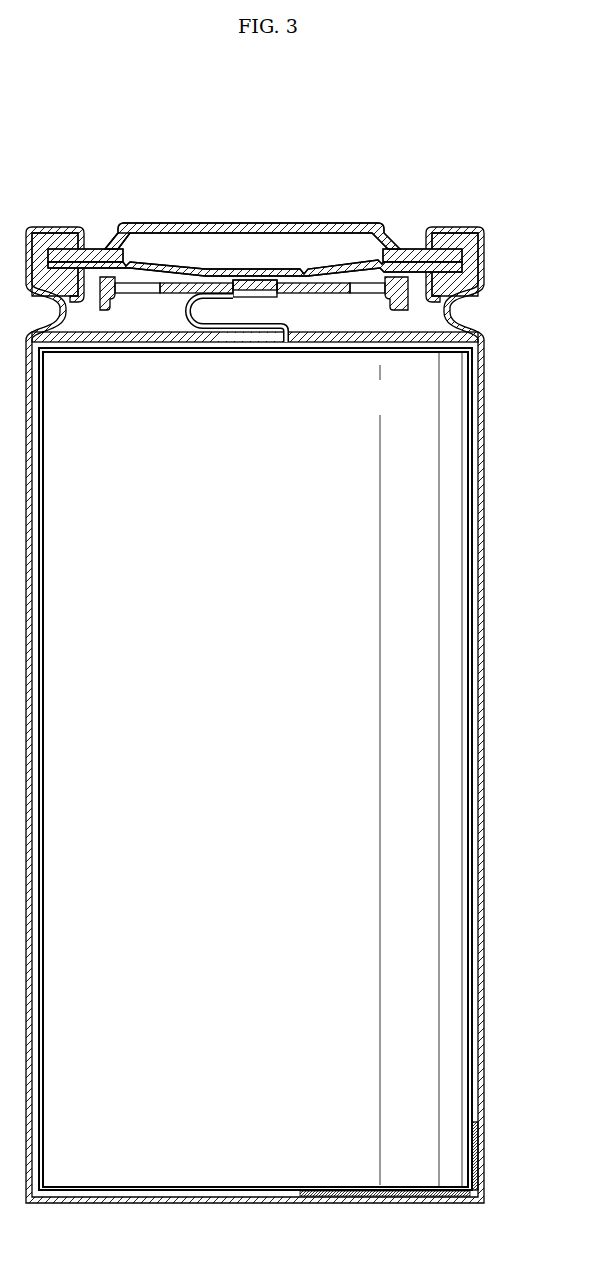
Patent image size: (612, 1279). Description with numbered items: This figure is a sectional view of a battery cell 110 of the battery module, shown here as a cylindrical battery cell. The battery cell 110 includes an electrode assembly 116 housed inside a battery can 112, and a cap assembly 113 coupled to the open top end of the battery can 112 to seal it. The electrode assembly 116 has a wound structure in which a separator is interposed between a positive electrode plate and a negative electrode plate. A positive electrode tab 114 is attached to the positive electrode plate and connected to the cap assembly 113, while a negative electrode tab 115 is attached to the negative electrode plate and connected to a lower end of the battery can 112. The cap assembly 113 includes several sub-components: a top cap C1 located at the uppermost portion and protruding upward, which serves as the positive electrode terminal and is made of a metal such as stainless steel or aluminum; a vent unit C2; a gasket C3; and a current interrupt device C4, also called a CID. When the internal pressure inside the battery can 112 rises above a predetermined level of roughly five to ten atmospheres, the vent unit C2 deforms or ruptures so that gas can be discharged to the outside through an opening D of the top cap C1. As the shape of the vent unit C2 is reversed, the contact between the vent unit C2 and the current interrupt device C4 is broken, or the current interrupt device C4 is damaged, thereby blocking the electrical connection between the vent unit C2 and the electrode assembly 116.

The battery cell 110 is at (176, 133).
The battery can 112 is at (479, 479).
The cap assembly 113 is at (451, 179).
The positive electrode tab 114 is at (190, 311).
The negative electrode tab 115 is at (477, 1157).
The electrode assembly 116 is at (455, 450).
The top cap C1 is at (313, 228).
The vent unit C2 is at (338, 266).
The gasket C3 is at (444, 245).
The current interrupt device C4 is at (370, 287).
The opening D is at (114, 244).